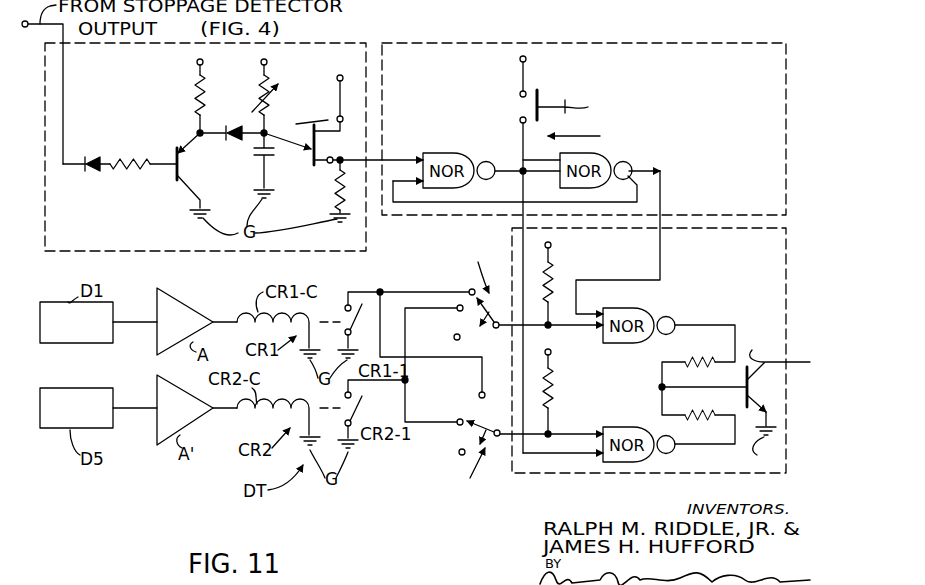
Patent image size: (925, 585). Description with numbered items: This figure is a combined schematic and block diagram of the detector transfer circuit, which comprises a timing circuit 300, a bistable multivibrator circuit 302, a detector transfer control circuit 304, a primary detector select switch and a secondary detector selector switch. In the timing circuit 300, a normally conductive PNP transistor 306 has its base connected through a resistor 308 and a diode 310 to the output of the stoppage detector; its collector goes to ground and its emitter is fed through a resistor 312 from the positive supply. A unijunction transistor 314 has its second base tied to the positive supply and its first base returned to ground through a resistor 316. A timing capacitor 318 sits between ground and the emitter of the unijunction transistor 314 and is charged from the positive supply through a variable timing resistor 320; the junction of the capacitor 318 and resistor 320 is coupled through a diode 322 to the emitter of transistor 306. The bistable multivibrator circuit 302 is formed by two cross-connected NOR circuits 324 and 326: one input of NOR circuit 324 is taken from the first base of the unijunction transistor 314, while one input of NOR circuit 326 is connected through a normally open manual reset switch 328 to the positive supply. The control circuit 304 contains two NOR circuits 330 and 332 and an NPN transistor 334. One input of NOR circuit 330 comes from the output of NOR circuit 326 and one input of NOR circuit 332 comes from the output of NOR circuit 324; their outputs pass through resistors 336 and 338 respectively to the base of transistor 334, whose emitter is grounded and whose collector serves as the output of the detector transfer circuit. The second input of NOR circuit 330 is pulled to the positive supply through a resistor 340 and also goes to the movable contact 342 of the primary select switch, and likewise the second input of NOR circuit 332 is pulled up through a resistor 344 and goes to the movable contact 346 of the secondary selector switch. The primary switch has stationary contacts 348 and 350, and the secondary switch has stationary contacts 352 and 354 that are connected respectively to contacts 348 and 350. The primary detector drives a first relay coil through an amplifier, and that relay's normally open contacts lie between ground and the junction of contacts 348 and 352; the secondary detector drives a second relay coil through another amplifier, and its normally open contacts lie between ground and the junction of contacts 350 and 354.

The timing circuit 300 is at (276, 262).
The bistable multivibrator circuit 302 is at (684, 40).
The detector transfer control circuit 304 is at (790, 252).
The PNP transistor 306 is at (176, 150).
The resistor 308 is at (135, 168).
The diode 310 is at (92, 158).
The resistor 312 is at (197, 95).
The unijunction transistor 314 is at (318, 166).
The resistor 316 is at (337, 202).
The timing capacitor 318 is at (257, 158).
The variable timing resistor 320 is at (272, 110).
The diode 322 is at (234, 141).
The NOR circuit 324 is at (440, 152).
The NOR circuit 326 is at (593, 152).
The manual reset switch 328 is at (548, 106).
The NOR circuit 330 is at (642, 308).
The NOR circuit 332 is at (645, 426).
The NPN transistor 334 is at (745, 378).
The resistor 336 is at (688, 359).
The resistor 338 is at (692, 420).
The resistor 340 is at (555, 276).
The movable contact 342 is at (492, 329).
The resistor 344 is at (555, 392).
The movable contact 346 is at (478, 418).
The stationary contact 348 is at (468, 286).
The stationary contact 350 is at (458, 312).
The stationary contact 352 is at (480, 390).
The stationary contact 354 is at (458, 428).